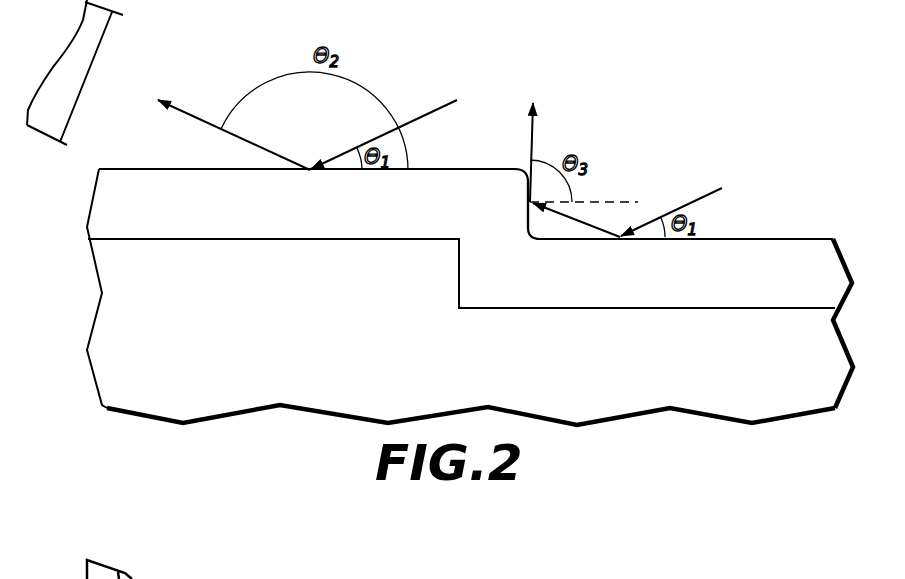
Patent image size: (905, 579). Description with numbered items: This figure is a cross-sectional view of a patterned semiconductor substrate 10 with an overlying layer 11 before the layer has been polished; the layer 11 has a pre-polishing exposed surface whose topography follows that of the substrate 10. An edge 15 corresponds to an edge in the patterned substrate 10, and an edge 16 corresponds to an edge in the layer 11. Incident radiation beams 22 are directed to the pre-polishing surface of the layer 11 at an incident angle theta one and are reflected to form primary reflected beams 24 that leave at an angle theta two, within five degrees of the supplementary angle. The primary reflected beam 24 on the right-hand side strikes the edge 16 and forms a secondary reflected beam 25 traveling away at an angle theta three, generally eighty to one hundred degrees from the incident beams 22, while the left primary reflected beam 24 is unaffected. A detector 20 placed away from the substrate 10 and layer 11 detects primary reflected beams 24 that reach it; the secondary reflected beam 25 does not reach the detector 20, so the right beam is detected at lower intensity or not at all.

The patterned semiconductor substrate 10 is at (765, 391).
The layer 11 is at (766, 287).
The edge 15 is at (457, 273).
The edge 16 is at (526, 190).
The detector 20 is at (90, 43).
The incident radiation beam 22 is at (427, 110).
The primary reflected beam 24 is at (198, 122).
The secondary reflected beam 25 is at (533, 127).